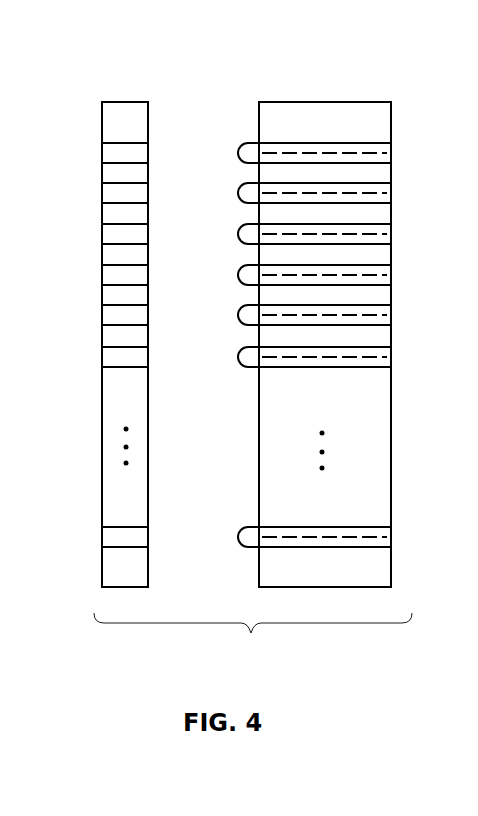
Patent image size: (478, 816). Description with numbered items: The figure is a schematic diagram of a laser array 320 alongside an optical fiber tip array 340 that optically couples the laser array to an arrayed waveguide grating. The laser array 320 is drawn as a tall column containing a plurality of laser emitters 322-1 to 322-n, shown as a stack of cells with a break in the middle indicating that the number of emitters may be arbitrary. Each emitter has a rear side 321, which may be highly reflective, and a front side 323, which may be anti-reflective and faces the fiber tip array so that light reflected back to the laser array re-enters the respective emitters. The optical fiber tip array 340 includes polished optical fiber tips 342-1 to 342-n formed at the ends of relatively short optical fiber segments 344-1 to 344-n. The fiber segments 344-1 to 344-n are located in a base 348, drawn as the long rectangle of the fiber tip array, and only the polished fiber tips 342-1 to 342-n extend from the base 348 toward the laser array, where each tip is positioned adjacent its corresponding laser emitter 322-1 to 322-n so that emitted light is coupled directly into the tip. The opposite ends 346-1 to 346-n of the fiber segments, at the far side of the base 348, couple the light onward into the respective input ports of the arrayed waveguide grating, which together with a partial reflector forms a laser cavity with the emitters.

The laser array 320 is at (124, 77).
The rear side 321 is at (92, 238).
The laser emitter 322-1 is at (102, 151).
The laser emitter 322-n is at (102, 535).
The front side 323 is at (158, 292).
The optical fiber tip array 340 is at (315, 305).
The polished optical fiber tip 342-1 is at (238, 152).
The polished optical fiber tip 342-n is at (239, 537).
The optical fiber segment 344-1 is at (364, 142).
The optical fiber segment 344-n is at (357, 527).
The opposite end 346-1 is at (391, 149).
The opposite end 346-n is at (391, 534).
The base 348 is at (270, 101).